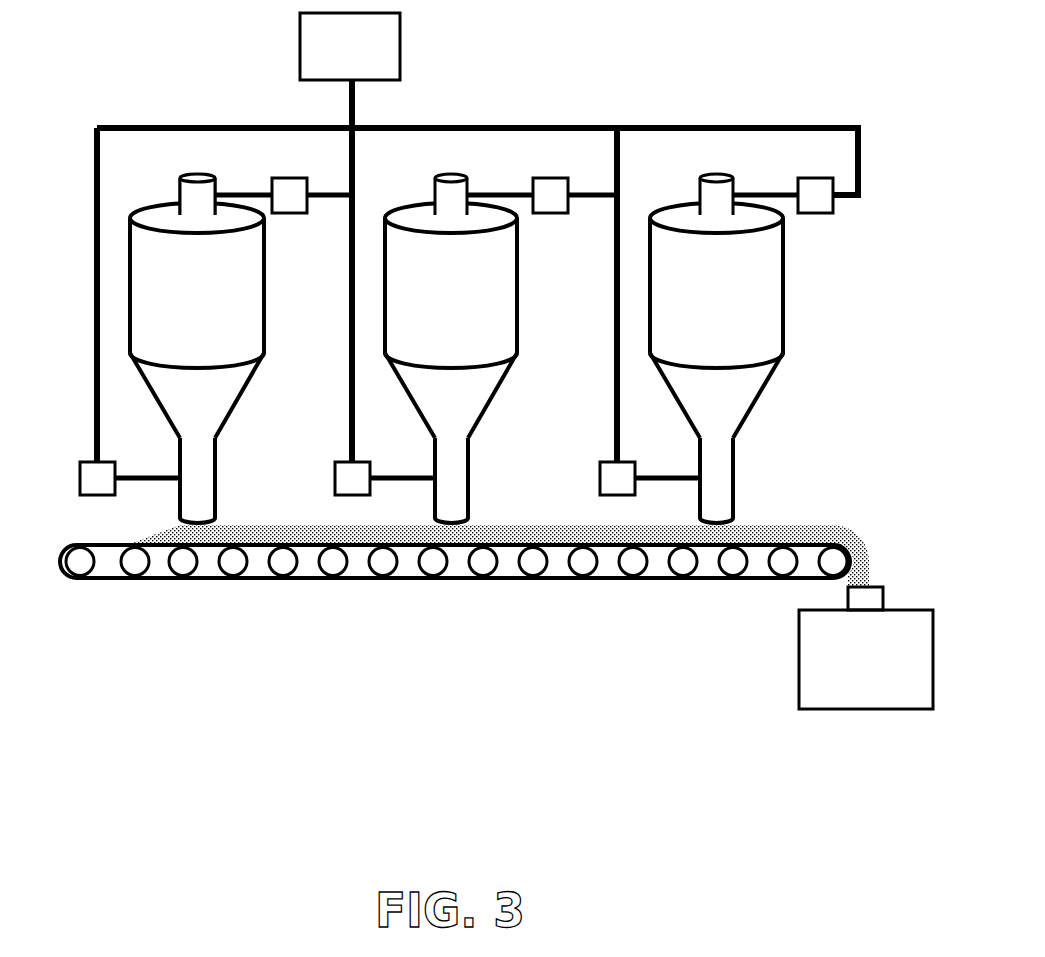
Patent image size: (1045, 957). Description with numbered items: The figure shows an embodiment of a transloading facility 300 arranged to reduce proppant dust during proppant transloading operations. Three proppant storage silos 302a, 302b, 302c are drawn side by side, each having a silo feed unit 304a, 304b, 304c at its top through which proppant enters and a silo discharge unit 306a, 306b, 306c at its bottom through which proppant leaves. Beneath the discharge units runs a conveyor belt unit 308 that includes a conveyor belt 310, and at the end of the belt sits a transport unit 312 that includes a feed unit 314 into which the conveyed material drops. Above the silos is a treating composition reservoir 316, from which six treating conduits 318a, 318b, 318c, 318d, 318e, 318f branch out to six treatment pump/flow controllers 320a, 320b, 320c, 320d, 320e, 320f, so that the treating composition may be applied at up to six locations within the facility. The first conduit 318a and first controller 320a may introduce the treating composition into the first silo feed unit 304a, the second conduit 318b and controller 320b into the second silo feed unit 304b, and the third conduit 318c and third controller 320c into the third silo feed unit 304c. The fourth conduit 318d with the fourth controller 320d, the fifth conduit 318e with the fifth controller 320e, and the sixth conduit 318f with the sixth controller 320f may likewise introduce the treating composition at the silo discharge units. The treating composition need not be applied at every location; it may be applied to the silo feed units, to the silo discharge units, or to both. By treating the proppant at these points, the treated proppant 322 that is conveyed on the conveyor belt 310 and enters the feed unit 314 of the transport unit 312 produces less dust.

The transloading facility 300 is at (828, 330).
The proppant storage silo 302a is at (175, 294).
The proppant storage silo 302b is at (429, 294).
The proppant storage silo 302c is at (694, 294).
The silo feed unit 304a is at (193, 197).
The silo feed unit 304b is at (447, 197).
The silo feed unit 304c is at (712, 197).
The silo discharge unit 306a is at (205, 480).
The silo discharge unit 306b is at (455, 487).
The silo discharge unit 306c is at (724, 483).
The conveyor belt unit 308 is at (455, 592).
The conveyor belt 310 is at (310, 580).
The transport unit 312 is at (849, 670).
The feed unit 314 is at (868, 598).
The treating composition reservoir 316 is at (333, 56).
The treating conduit 318a is at (336, 192).
The treating conduit 318b is at (600, 192).
The treating conduit 318c is at (750, 126).
The treating conduit 318d is at (95, 312).
The treating conduit 318e is at (350, 312).
The treating conduit 318f is at (615, 312).
The treatment pump/flow controller 320a is at (270, 180).
The treatment pump/flow controller 320b is at (531, 180).
The treatment pump/flow controller 320c is at (796, 180).
The treatment pump/flow controller 320d is at (82, 462).
The treatment pump/flow controller 320e is at (340, 462).
The treatment pump/flow controller 320f is at (600, 462).
The treated proppant 322 is at (820, 535).